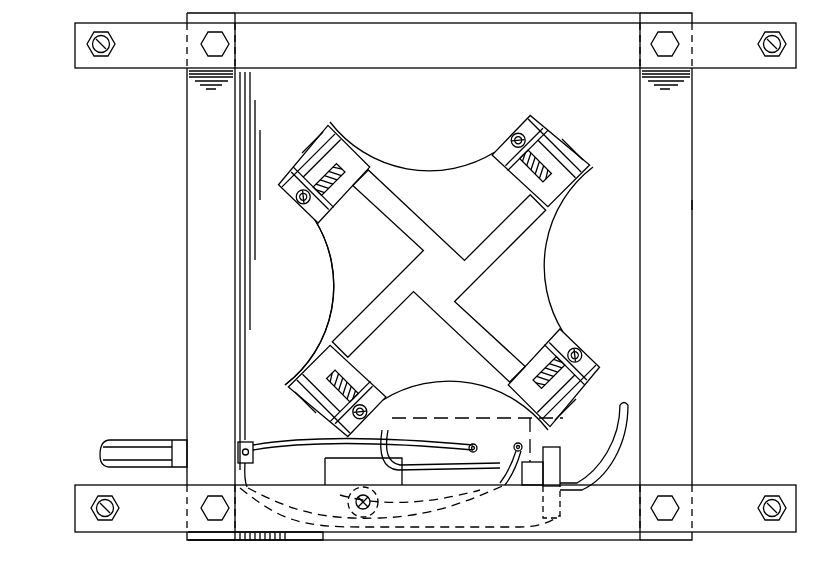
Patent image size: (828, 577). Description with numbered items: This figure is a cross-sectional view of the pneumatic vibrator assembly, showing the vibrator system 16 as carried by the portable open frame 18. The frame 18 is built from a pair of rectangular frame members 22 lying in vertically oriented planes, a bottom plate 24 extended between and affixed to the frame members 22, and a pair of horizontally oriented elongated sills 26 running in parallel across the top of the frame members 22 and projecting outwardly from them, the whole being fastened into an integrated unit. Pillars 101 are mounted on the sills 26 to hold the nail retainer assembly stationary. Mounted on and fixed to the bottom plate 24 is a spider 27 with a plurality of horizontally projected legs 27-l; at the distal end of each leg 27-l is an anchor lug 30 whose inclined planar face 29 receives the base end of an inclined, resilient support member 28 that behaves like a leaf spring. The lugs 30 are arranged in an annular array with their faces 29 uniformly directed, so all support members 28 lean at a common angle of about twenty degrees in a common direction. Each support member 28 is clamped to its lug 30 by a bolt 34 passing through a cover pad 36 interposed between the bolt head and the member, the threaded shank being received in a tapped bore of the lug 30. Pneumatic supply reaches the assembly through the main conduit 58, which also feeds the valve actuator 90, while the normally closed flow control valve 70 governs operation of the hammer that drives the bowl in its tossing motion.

The vibrator system 16 is at (545, 265).
The portable open frame 18 is at (705, 200).
The rectangular frame members 22 is at (200, 305).
The bottom plate 24 is at (432, 114).
The elongated sills 26 is at (147, 70).
The spider 27 is at (345, 287).
The horizontally projected legs 27-l is at (333, 128).
The inclined vertical support members 28 is at (300, 152).
The inclined planar faces 29 is at (342, 208).
The anchor lugs 30 is at (323, 163).
The bolts 34 is at (301, 215).
The cover pads 36 is at (290, 183).
The main conduit 58 is at (140, 448).
The flow control valve 70 is at (340, 511).
The valve actuator 90 is at (568, 465).
The pillars 101 is at (104, 56).